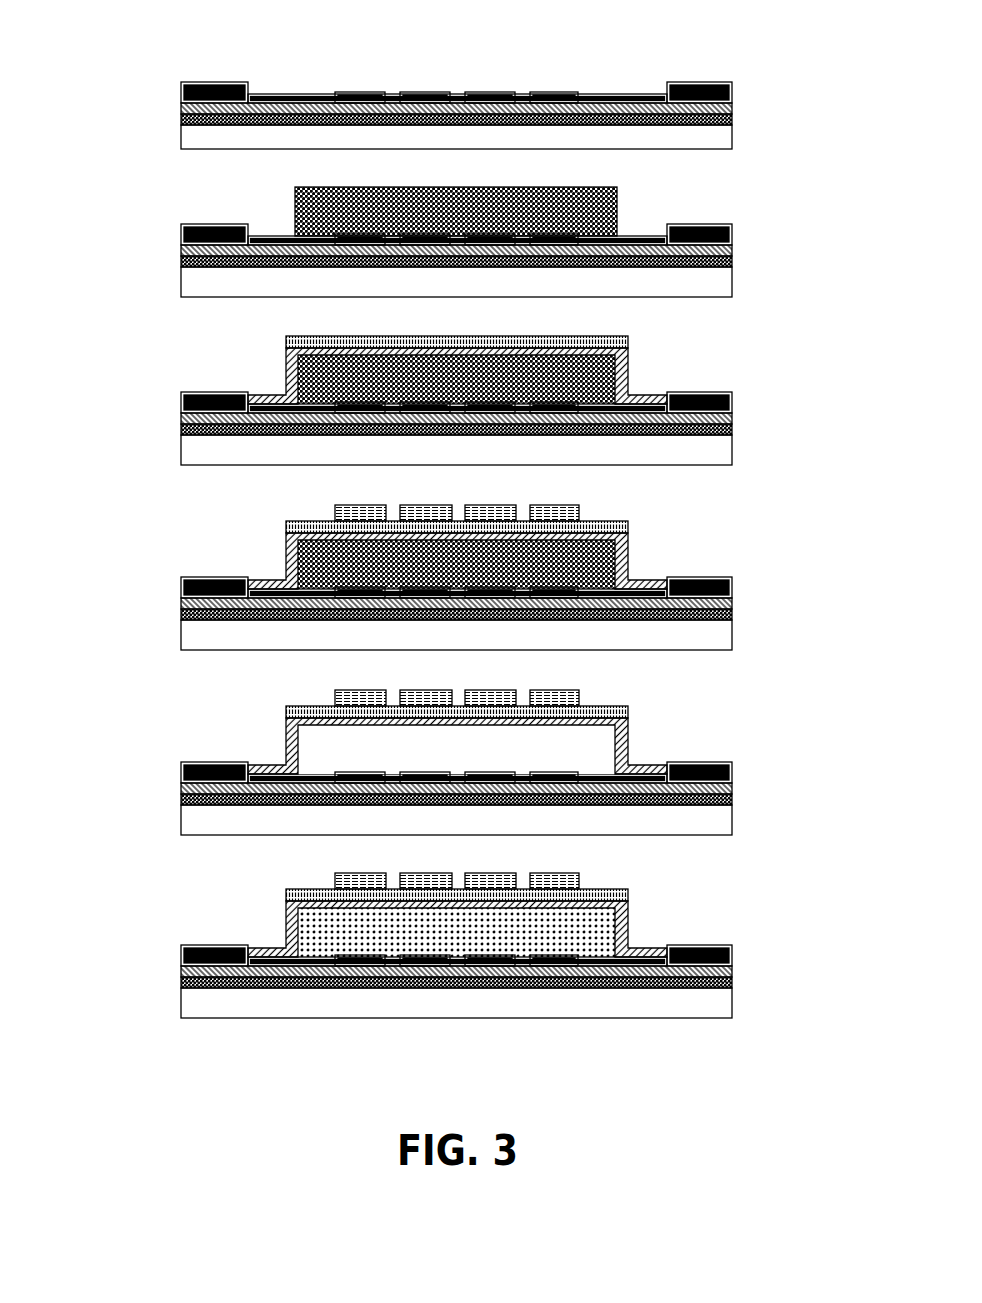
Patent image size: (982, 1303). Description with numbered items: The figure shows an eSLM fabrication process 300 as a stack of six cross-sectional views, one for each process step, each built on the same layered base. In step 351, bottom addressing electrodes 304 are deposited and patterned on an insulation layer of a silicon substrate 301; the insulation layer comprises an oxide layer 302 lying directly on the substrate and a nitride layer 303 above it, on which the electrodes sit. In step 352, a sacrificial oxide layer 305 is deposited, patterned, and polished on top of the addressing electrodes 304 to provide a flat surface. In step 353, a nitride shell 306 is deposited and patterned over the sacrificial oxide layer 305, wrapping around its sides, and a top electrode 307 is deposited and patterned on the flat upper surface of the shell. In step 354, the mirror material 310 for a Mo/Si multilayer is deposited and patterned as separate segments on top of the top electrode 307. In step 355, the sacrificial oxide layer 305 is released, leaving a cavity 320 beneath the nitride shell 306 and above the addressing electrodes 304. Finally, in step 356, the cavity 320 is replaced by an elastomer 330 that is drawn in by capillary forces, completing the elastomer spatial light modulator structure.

The eSLM fabrication process 300 is at (852, 1080).
The silicon substrate 301 is at (708, 136).
The oxide layer 302 is at (732, 116).
The nitride layer 303 is at (732, 104).
The bottom (addressing) electrodes 304 is at (710, 90).
The sacrificial oxide layer 305 is at (610, 206).
The nitride shell 306 is at (626, 380).
The top electrode 307 is at (610, 342).
The mirror material 310 is at (596, 509).
The cavity 320 is at (570, 748).
The elastomer 330 is at (572, 933).
The step 351 is at (108, 108).
The step 352 is at (108, 262).
The step 353 is at (108, 408).
The step 354 is at (108, 588).
The step 355 is at (108, 768).
The step 356 is at (108, 947).